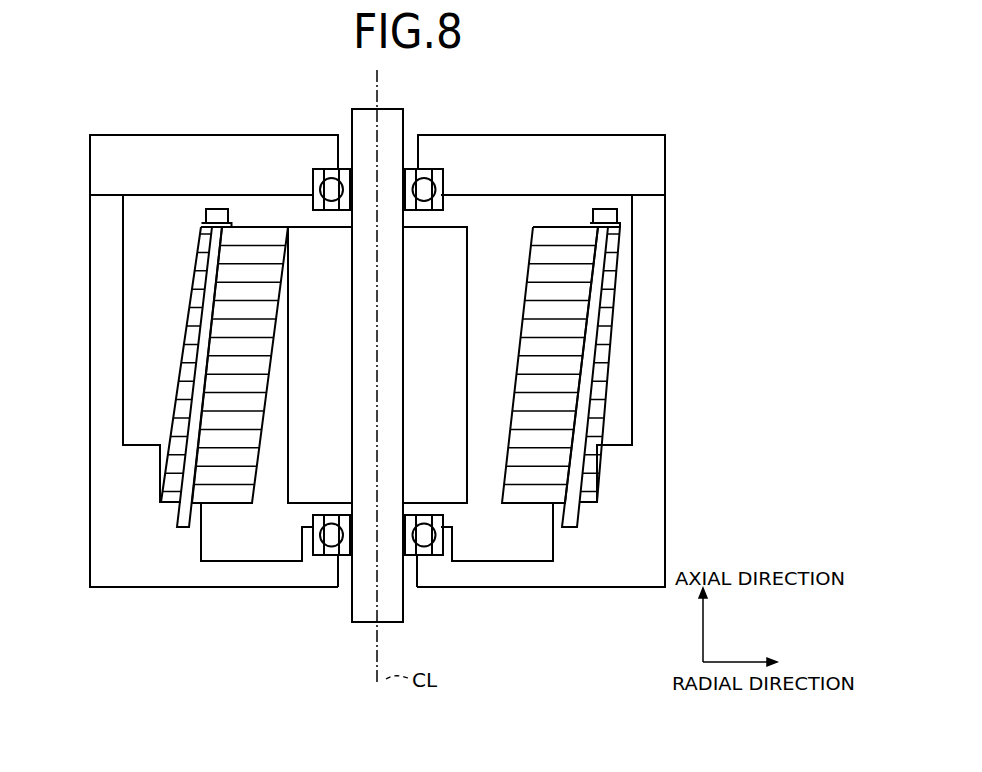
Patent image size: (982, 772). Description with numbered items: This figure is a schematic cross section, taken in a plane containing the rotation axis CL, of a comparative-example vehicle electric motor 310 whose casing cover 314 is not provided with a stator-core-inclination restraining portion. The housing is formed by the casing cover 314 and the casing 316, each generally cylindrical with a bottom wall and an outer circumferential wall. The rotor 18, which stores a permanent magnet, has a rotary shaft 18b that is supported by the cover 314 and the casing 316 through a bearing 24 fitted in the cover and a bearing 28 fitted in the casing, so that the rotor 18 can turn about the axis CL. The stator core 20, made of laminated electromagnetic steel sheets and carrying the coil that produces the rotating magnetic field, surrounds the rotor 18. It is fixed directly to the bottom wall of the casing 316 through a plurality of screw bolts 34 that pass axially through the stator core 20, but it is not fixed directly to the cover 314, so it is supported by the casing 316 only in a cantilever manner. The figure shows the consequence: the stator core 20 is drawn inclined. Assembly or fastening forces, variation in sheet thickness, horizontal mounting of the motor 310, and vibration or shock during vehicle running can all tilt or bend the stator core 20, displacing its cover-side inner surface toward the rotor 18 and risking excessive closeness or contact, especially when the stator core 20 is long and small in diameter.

The electric motor 310 is at (679, 98).
The casing cover 314 is at (107, 143).
The casing 316 is at (105, 569).
The rotor 18 is at (300, 462).
The rotary shaft 18b is at (363, 600).
The stator core 20 is at (242, 280).
The screw bolts 34 is at (218, 216).
The bearing 24 is at (435, 177).
The bearing 28 is at (408, 548).